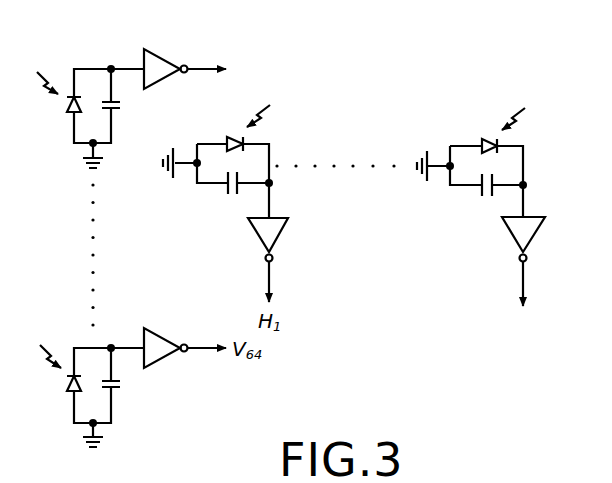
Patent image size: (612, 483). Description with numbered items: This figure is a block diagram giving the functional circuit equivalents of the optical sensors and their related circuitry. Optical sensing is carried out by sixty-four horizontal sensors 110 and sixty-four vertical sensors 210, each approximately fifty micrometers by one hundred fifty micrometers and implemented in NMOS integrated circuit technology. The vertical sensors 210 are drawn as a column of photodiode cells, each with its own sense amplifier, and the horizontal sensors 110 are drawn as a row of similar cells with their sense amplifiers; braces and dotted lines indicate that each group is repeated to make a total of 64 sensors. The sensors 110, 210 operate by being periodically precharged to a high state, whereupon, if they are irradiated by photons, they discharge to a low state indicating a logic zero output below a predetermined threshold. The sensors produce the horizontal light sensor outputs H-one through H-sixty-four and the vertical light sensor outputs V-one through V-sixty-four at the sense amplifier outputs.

The vertical sensors 210 is at (72, 54).
The horizontal sensors 110 is at (521, 82).
The array of photodiode cells 64 is at (425, 77).